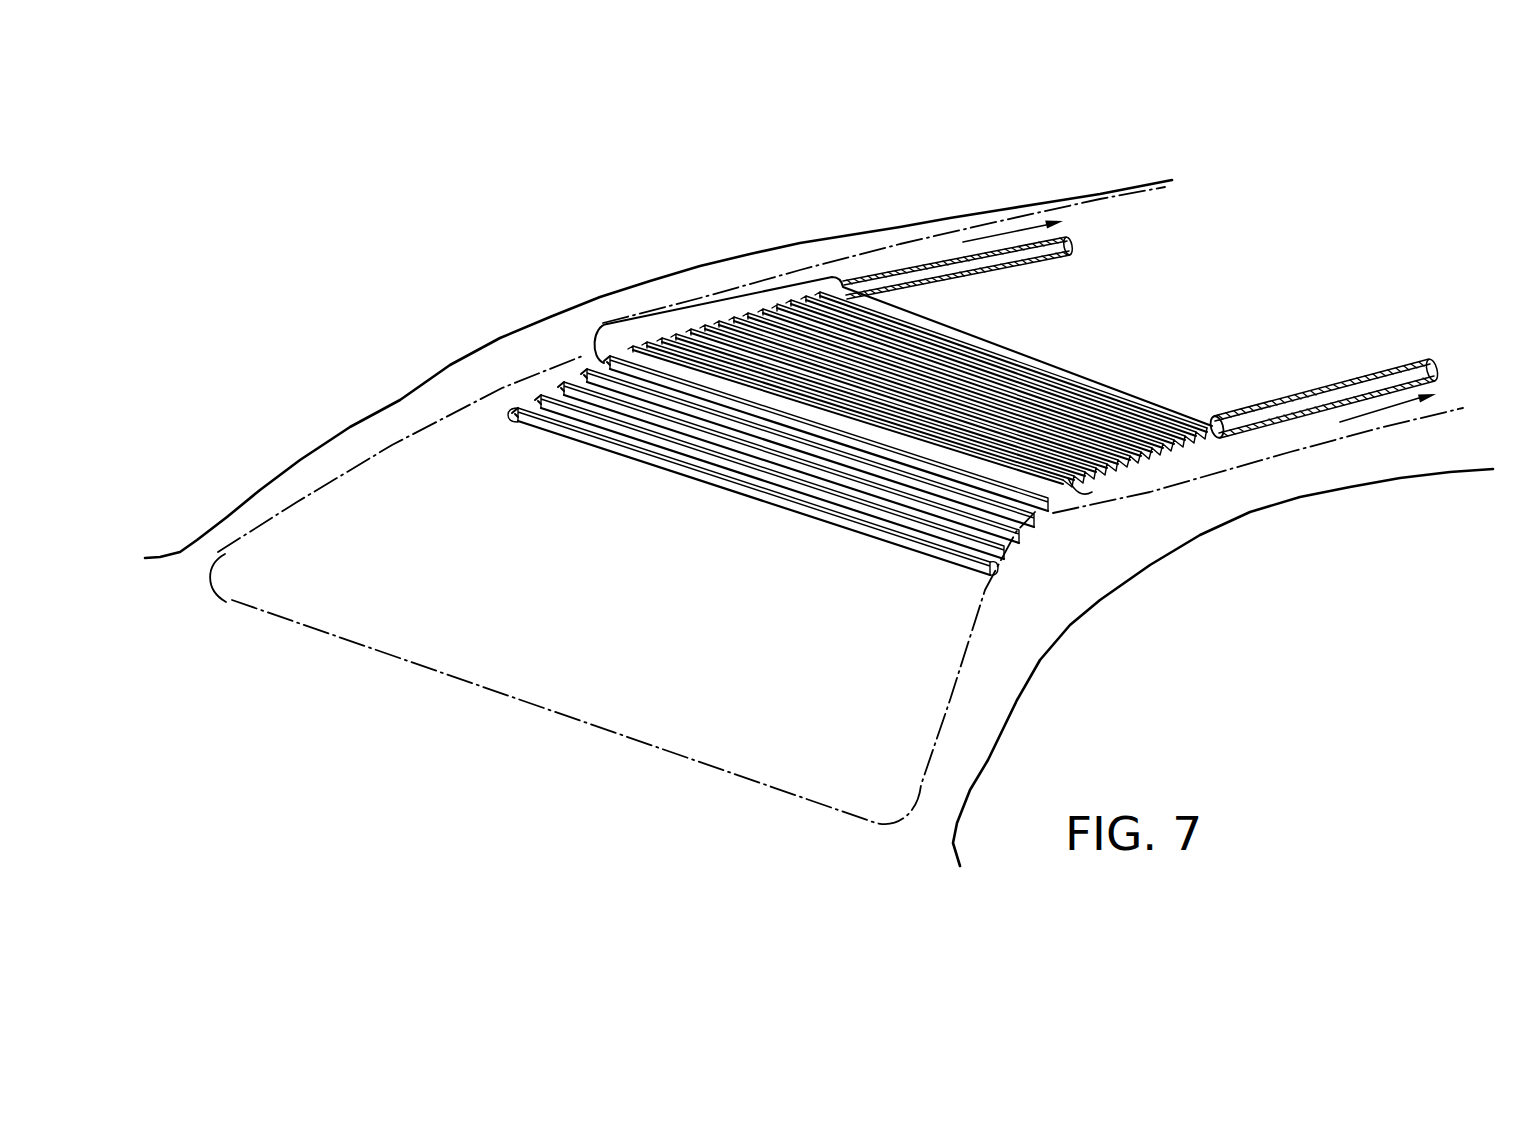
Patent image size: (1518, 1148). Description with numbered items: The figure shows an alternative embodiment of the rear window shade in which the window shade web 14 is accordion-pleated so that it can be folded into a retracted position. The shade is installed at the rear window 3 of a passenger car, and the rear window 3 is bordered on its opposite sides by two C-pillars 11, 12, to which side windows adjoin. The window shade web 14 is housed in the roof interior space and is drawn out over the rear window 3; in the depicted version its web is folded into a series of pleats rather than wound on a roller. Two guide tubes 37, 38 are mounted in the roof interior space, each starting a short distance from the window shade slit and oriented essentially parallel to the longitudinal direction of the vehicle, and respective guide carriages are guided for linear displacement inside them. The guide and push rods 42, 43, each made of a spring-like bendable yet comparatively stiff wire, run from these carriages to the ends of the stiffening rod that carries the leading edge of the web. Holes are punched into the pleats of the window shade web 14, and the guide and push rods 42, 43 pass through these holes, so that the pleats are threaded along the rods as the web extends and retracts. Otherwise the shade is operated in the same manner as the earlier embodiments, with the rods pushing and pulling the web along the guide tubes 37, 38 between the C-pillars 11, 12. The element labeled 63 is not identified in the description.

The rear window 3 is at (596, 733).
The C-pillar 11 is at (1012, 665).
The C-pillar 12 is at (393, 414).
The window shade web 14 is at (827, 500).
The guide tube 37 is at (1073, 263).
The guide tube 38 is at (1380, 365).
The guide and push rod 42 is at (937, 281).
The guide and push rod 43 is at (1292, 393).
The guide rail / housing 63 is at (1030, 562).